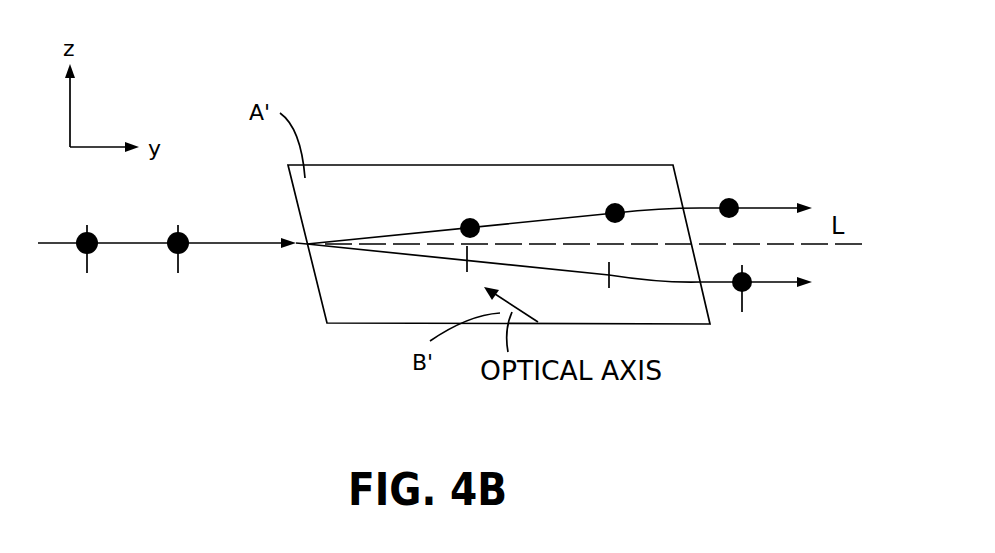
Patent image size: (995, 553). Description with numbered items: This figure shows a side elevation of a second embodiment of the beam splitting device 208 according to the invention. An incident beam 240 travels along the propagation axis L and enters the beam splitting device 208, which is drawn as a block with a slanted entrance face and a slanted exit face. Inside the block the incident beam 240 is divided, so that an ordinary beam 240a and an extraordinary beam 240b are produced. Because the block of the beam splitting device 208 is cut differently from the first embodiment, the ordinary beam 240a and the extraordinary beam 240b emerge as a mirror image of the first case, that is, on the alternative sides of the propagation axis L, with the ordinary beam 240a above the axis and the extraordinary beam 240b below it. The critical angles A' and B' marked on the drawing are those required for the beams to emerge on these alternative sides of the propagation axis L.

The beam splitting device 208 is at (458, 178).
The incident beam 240 is at (140, 254).
The ordinary beam 240a is at (773, 178).
The extraordinary beam 240b is at (773, 310).